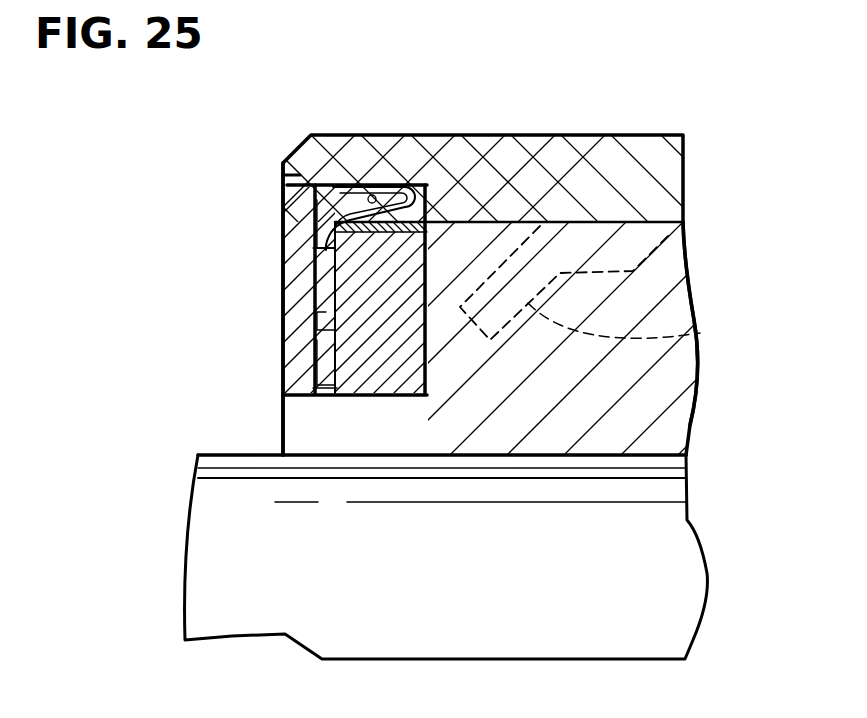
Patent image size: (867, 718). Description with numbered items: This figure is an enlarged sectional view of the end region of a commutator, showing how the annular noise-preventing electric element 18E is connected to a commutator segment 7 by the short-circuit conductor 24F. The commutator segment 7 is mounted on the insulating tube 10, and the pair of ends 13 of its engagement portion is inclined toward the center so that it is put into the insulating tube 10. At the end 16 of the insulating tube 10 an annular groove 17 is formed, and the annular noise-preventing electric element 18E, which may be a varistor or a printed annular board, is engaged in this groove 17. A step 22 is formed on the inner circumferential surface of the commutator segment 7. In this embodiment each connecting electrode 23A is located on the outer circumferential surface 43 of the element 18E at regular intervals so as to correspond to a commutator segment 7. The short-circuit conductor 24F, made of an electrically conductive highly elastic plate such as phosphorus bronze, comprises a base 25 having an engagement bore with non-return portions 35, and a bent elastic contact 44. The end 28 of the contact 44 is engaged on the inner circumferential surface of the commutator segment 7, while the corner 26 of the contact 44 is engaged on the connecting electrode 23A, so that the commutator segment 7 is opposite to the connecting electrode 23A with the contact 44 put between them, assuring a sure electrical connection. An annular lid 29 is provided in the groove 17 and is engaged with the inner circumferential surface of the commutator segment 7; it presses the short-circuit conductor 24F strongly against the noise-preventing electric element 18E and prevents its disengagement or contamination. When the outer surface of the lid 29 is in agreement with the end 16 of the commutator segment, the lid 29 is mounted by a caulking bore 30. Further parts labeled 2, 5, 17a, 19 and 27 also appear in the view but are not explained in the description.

The shaft 2 is at (668, 547).
The sealing device 5 is at (702, 237).
The commutator segment 7 is at (667, 175).
The insulating tube 10 is at (637, 405).
The ends of the engagement portion 13 is at (700, 333).
The end of the insulating tube 16 is at (283, 175).
The annular groove 17 is at (313, 360).
The seal case flange 17a is at (400, 398).
The noise-preventing electric element 18E is at (447, 258).
The inner case wall 19 is at (372, 398).
The step 22 is at (300, 197).
The connecting electrode 23A is at (305, 222).
The short-circuit conductor 24F is at (298, 245).
The base 25 is at (313, 338).
The corner of the contact 26 is at (415, 188).
The outer wall 27 is at (452, 183).
The end of the contact 28 is at (342, 190).
The lid 29 is at (278, 371).
The caulking bore 30 is at (283, 180).
The non-return portions 35 is at (313, 295).
The outer circumferential surface 43 is at (432, 224).
The elastic contact 44 is at (378, 195).